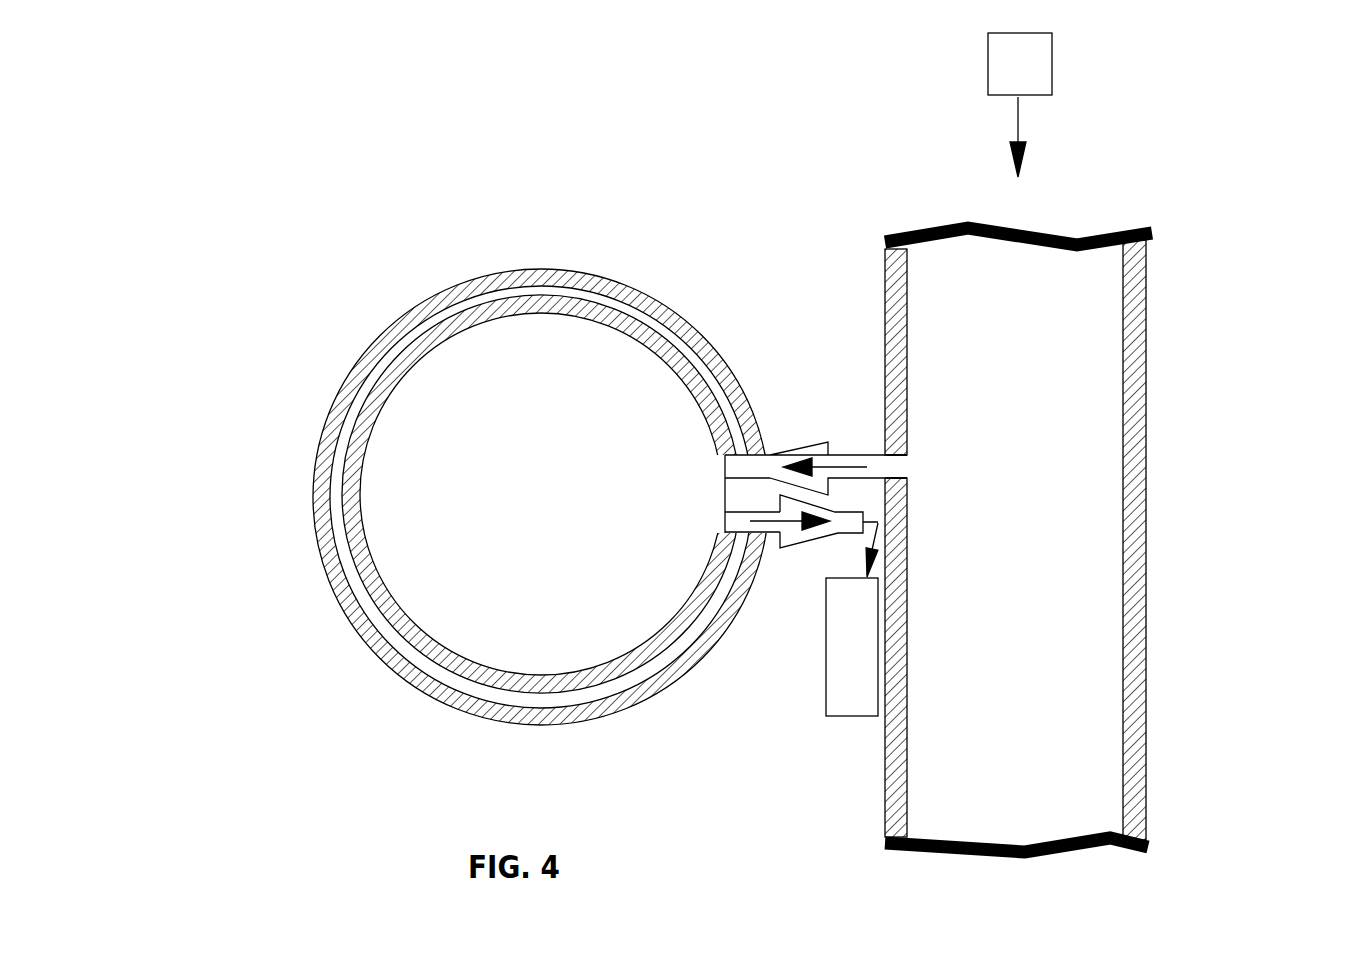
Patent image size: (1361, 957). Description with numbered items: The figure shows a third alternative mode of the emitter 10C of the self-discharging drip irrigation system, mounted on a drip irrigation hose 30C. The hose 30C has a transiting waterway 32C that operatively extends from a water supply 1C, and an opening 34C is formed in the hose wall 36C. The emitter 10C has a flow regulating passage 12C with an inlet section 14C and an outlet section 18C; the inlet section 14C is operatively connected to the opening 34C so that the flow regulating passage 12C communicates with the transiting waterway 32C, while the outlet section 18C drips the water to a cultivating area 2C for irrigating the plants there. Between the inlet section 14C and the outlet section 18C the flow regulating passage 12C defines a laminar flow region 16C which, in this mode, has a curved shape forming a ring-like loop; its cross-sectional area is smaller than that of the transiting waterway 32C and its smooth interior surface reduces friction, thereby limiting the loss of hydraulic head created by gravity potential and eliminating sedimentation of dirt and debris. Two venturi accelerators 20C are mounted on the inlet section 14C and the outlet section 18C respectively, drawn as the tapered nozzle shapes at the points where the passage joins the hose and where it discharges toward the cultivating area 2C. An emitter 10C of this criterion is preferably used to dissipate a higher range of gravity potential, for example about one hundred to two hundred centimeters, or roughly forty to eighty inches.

The emitter 10C is at (440, 207).
The flow regulating passage 12C is at (300, 333).
The laminar flow region 16C is at (470, 702).
The venturi accelerators 20C is at (797, 442).
The inlet section 14C is at (828, 442).
The outlet section 18C is at (840, 534).
The drip irrigation hose 30C is at (1235, 200).
The transiting waterway 32C is at (1058, 365).
The hose wall 36C is at (1148, 415).
The opening 34C is at (880, 455).
The water supply 1C is at (1018, 63).
The cultivating area 2C is at (862, 640).